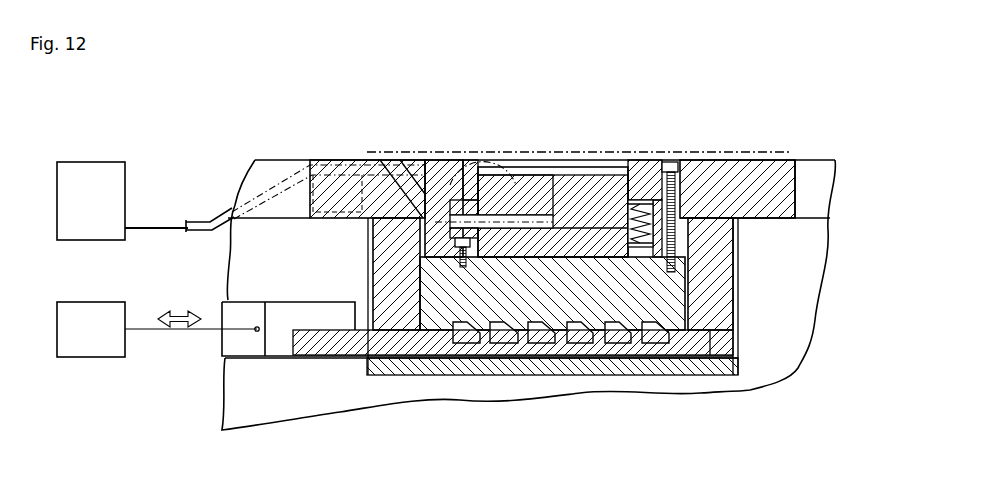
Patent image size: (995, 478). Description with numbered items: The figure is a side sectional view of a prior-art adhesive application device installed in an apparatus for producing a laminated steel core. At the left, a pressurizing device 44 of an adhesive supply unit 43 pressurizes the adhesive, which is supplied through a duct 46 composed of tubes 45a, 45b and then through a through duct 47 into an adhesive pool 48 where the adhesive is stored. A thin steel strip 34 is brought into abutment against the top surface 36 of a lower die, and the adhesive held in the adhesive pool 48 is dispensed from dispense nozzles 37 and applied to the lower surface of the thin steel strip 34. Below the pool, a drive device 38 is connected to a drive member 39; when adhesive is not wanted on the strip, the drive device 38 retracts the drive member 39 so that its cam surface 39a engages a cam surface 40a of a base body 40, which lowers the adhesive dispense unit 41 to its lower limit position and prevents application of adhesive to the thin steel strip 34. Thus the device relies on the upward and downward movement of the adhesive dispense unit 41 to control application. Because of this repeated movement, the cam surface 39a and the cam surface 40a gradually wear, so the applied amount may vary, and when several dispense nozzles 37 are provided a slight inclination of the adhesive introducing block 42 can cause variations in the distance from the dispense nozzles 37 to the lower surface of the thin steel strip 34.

The thin steel strip 34 is at (775, 152).
The top surface of lower die 36 is at (826, 160).
The dispense nozzles 37 is at (497, 165).
The drive device 38 is at (103, 302).
The drive member 39 is at (347, 357).
The cam surface of drive member 39a is at (702, 375).
The base body 40 is at (685, 302).
The cam surface of base body 40a is at (626, 345).
The adhesive dispense unit 41 is at (650, 158).
The adhesive introducing block 42 is at (572, 250).
The adhesive supply unit 43 is at (190, 157).
The pressurizing device 44 is at (98, 162).
The tube 45a is at (204, 232).
The tube 45b is at (326, 160).
The duct 46 is at (231, 212).
The through duct 47 is at (522, 257).
The adhesive pool 48 is at (566, 167).